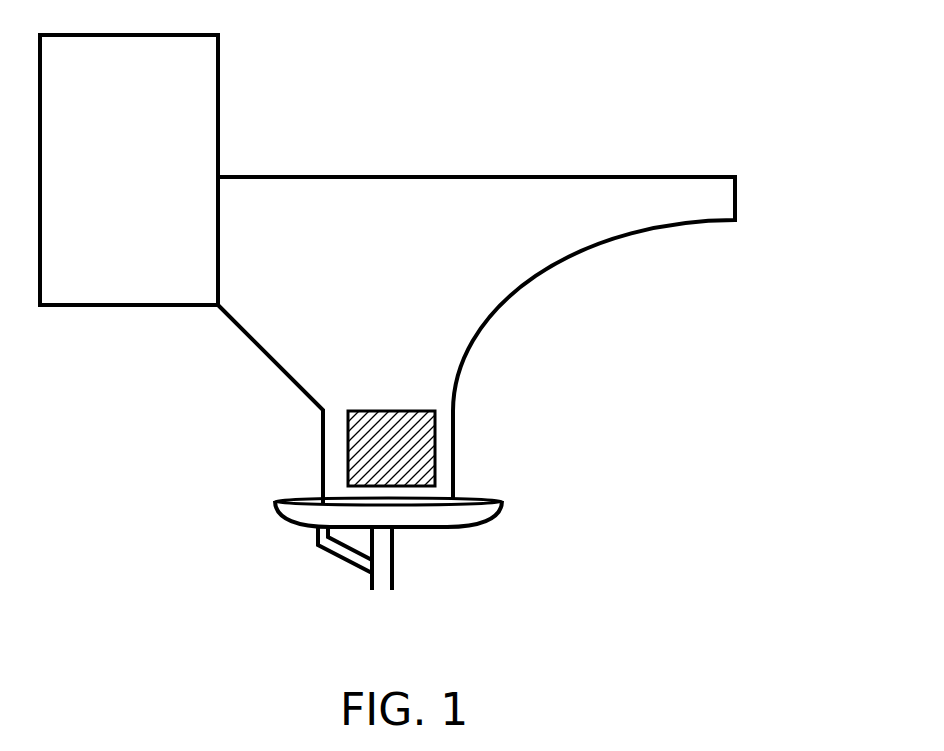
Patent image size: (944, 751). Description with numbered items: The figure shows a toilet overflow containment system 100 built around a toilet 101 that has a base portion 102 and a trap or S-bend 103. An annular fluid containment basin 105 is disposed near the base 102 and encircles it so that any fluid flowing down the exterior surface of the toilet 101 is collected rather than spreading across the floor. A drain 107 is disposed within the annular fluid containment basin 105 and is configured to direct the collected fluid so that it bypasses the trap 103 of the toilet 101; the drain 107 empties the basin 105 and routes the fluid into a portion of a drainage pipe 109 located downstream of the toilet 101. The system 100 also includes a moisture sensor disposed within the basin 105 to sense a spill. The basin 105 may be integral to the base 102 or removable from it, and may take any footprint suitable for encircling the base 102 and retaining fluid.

The toilet overflow containment system 100 is at (452, 80).
The toilet 101 is at (730, 265).
The base portion 102 is at (318, 452).
The trap or S-bend 103 is at (389, 405).
The annular fluid containment basin 105 is at (505, 508).
The drain 107 is at (315, 543).
The drainage pipe 109 is at (400, 553).